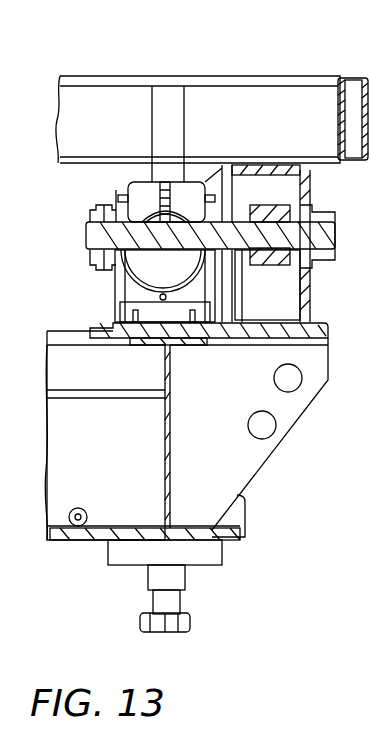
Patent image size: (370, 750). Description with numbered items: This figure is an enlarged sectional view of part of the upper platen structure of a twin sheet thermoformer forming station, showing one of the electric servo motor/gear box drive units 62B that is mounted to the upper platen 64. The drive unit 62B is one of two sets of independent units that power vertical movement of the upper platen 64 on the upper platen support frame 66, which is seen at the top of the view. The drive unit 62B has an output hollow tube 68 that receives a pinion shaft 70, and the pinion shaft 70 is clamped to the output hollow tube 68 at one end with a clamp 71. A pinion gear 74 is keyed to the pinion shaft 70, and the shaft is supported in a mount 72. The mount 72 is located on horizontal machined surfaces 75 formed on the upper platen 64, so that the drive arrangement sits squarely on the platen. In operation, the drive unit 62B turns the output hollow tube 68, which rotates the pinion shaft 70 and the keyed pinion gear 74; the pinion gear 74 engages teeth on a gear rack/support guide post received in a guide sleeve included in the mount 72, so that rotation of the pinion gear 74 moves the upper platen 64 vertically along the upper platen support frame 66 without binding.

The upper platen support frame 66 is at (356, 77).
The output hollow tube 68 is at (121, 182).
The pinion gear 74 is at (260, 205).
The clamp 71 is at (96, 210).
The pinion shaft 70 is at (104, 240).
The electric servo motor/gear box drive unit 62B is at (118, 287).
The mount 72 is at (312, 288).
The horizontal machined surfaces 75 is at (313, 313).
The upper platen 64 is at (275, 450).